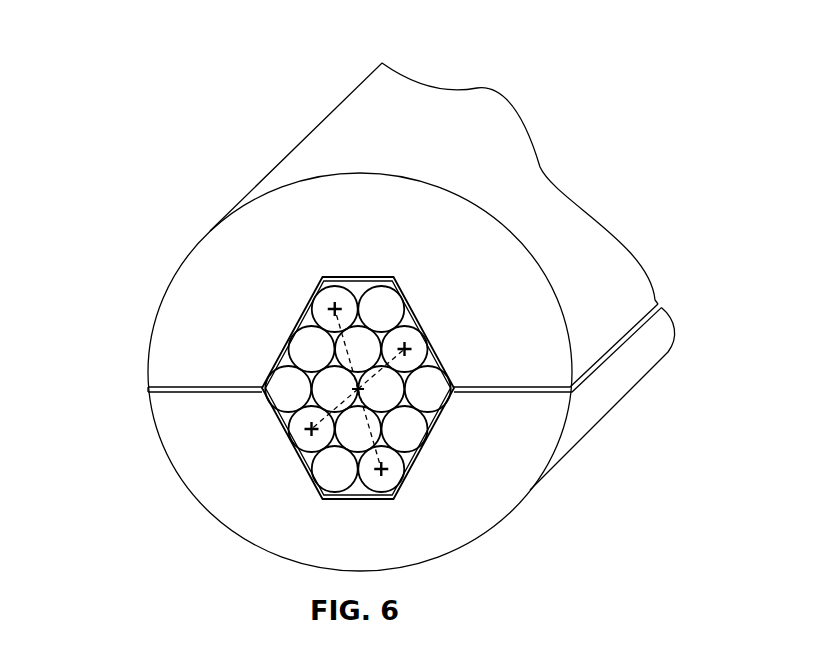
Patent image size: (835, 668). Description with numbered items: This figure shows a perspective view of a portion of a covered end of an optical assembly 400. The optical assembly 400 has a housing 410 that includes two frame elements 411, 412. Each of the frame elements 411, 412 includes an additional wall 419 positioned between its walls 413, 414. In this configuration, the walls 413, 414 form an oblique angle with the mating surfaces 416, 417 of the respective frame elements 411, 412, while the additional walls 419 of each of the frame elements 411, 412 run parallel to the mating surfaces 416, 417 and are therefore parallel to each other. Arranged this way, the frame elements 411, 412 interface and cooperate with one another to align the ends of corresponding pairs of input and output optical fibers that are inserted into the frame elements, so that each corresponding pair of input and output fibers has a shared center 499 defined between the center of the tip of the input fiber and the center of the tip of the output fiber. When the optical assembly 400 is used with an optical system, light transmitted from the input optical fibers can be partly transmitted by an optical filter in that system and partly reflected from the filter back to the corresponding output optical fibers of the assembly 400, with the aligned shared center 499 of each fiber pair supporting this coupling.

The optical assembly 400 is at (131, 49).
The housing 410 is at (668, 302).
The frame element 411 is at (503, 255).
The frame element 412 is at (533, 447).
The wall 413 is at (437, 355).
The wall 414 is at (281, 353).
The mating surface 416 is at (227, 387).
The mating surface 417 is at (172, 396).
The additional wall 419 is at (357, 278).
The shared center 499 is at (358, 389).